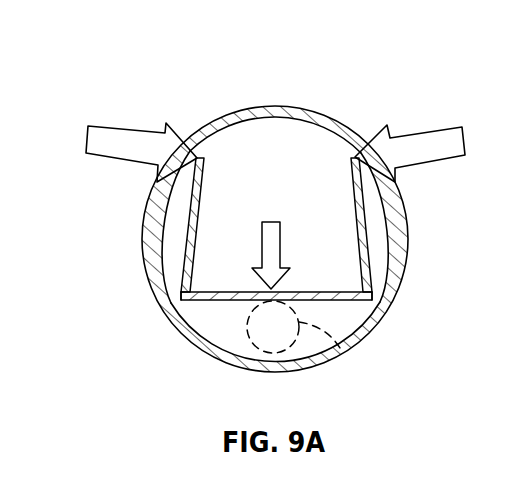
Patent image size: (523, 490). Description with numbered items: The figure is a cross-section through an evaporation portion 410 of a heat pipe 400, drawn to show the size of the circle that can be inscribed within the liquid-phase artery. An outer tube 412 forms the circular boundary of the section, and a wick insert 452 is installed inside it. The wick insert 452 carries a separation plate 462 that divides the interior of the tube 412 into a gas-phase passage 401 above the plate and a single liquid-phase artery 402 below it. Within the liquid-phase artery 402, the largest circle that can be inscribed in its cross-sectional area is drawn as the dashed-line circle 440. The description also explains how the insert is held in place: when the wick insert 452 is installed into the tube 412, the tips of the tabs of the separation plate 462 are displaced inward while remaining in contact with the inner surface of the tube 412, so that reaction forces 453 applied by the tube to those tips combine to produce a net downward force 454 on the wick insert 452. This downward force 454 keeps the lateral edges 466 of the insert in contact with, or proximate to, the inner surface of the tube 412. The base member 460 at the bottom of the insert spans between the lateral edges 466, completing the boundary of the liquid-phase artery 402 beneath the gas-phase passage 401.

The heat pipe 400 is at (124, 38).
The evaporation portion 410 is at (232, 86).
The outer tube 412 is at (406, 237).
The gas-phase passage 401 is at (307, 153).
The wick insert 452 is at (164, 234).
The reaction forces 453 is at (110, 127).
The net downward force 454 is at (270, 240).
The base plate 460 is at (205, 292).
The separation plate 462 is at (203, 172).
The lateral edges 466 is at (181, 298).
The liquid-phase artery 402 is at (229, 323).
The dashed-line circle 440 is at (340, 348).